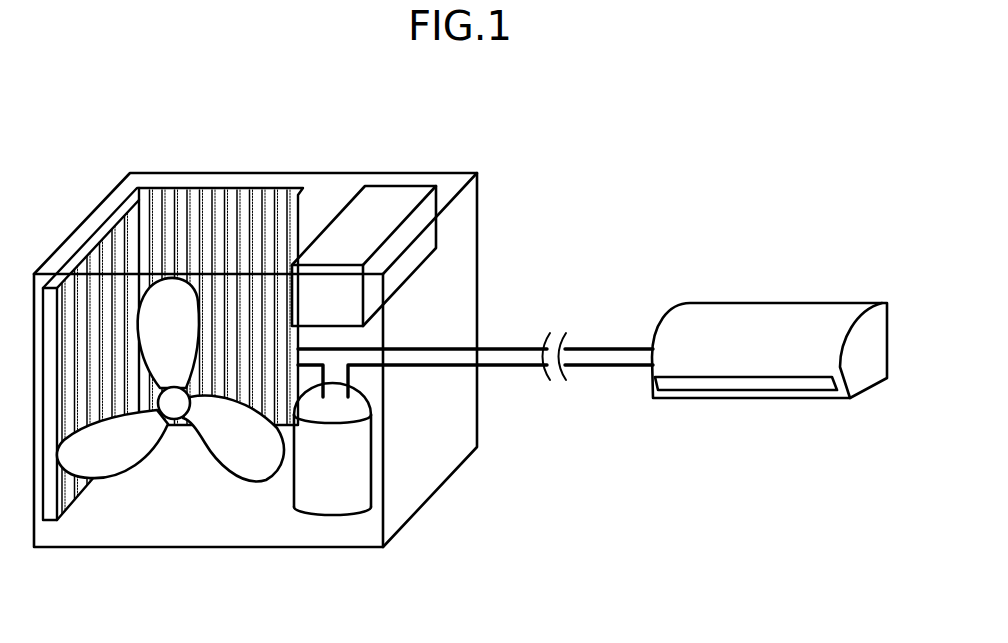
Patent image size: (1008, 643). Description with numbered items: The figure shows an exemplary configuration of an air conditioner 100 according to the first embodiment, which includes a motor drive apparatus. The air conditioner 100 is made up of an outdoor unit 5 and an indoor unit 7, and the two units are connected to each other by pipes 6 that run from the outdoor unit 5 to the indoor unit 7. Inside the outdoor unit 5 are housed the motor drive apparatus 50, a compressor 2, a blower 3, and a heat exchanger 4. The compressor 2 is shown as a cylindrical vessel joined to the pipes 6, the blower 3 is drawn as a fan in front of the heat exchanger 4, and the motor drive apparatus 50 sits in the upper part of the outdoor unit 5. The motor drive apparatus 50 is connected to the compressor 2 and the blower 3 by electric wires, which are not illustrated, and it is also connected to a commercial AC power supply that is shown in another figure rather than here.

The air conditioner 100 is at (636, 133).
The outdoor unit 5 is at (157, 172).
The heat exchanger 4 is at (219, 187).
The blower 3 is at (126, 478).
The motor drive apparatus 50 is at (405, 187).
The pipes 6 is at (522, 347).
The compressor 2 is at (332, 515).
The indoor unit 7 is at (782, 302).